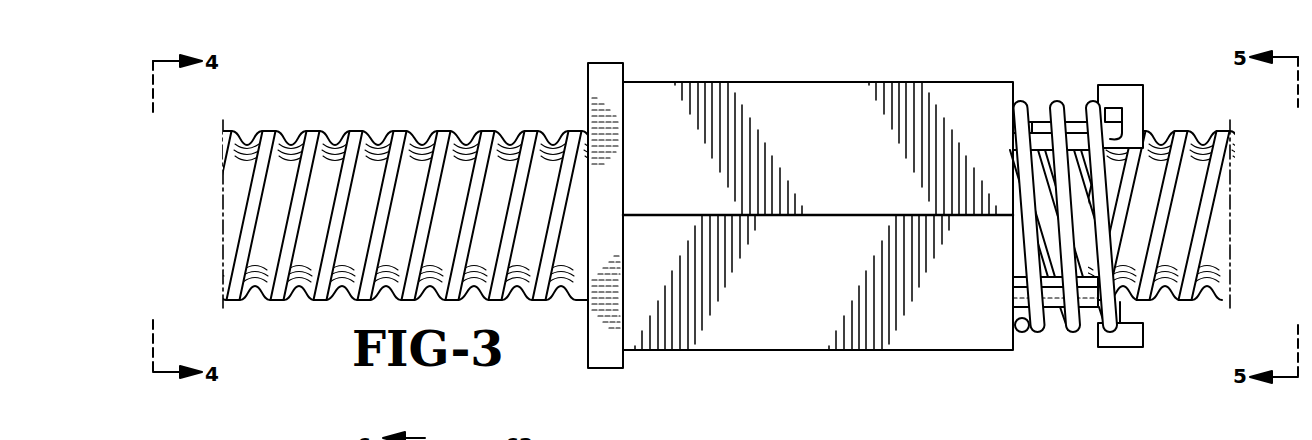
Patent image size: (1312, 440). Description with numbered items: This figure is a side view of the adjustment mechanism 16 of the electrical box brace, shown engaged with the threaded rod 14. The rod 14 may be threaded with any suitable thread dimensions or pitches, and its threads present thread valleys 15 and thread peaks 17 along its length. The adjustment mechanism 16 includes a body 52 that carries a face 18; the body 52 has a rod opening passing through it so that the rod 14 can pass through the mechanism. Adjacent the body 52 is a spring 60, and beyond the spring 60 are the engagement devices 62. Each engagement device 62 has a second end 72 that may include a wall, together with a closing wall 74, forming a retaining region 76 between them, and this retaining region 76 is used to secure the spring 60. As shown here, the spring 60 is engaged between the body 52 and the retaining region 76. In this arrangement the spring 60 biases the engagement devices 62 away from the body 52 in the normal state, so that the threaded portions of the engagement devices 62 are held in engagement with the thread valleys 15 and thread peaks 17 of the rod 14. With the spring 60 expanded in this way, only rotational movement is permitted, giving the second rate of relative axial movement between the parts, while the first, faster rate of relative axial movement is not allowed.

The rod 14 is at (357, 130).
The thread valleys 15 is at (268, 228).
The adjustment mechanism 16 is at (532, 86).
The thread peaks 17 is at (531, 130).
The face 18 is at (588, 330).
The body 52 is at (730, 350).
The spring 60 is at (1042, 338).
The engagement device 62 is at (1129, 219).
The second end 72 is at (1143, 93).
The closing wall 74 is at (1115, 92).
The retaining region 76 is at (1104, 87).